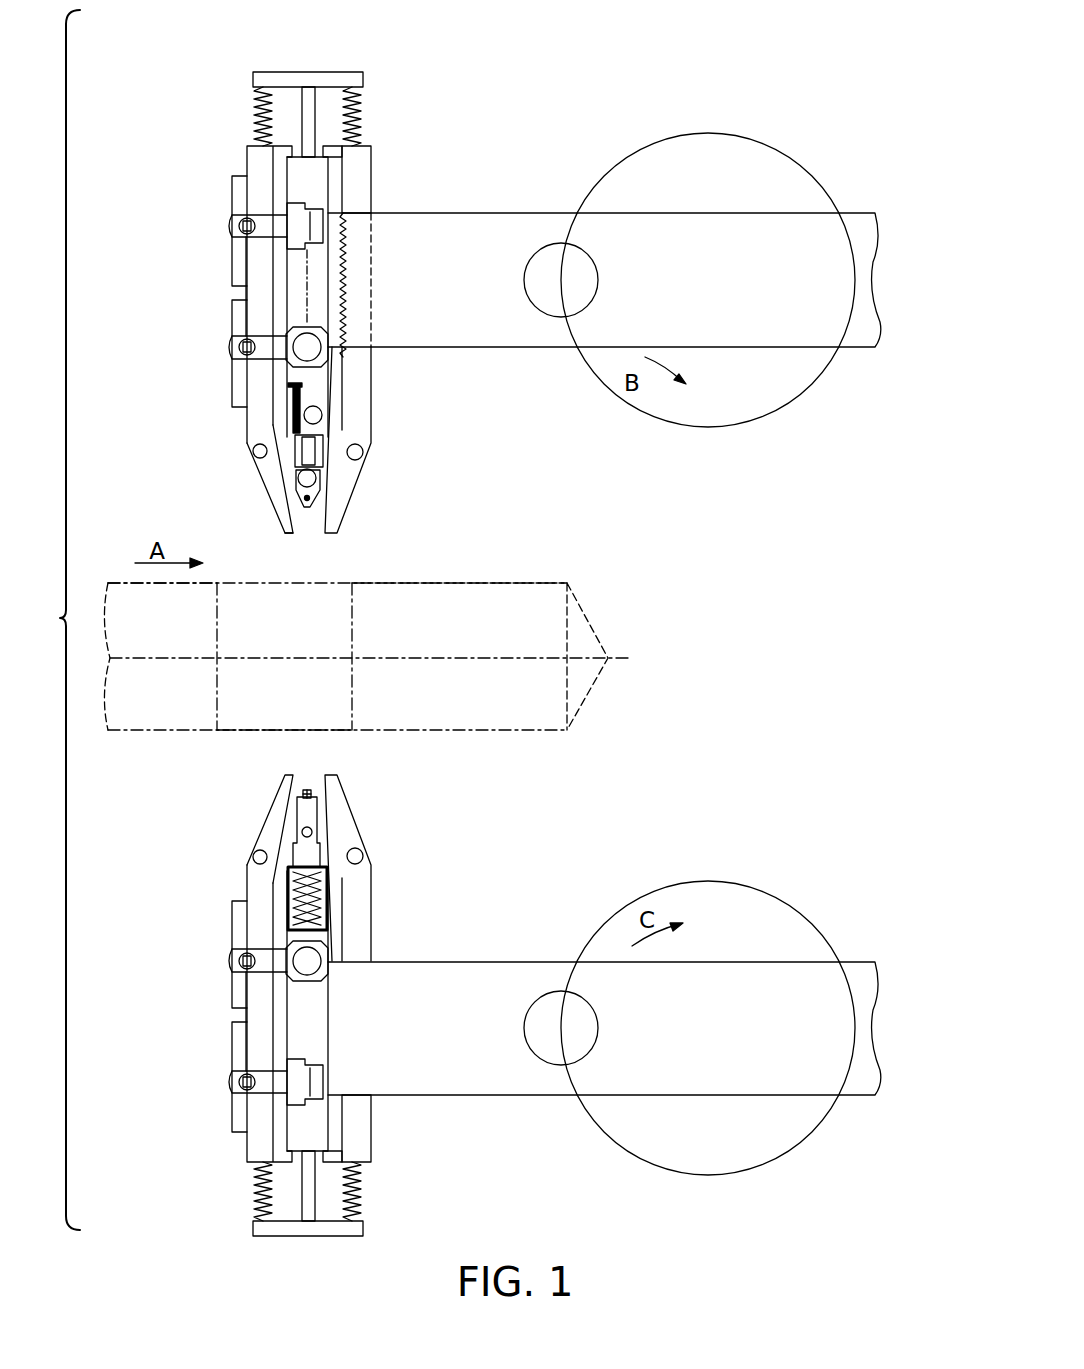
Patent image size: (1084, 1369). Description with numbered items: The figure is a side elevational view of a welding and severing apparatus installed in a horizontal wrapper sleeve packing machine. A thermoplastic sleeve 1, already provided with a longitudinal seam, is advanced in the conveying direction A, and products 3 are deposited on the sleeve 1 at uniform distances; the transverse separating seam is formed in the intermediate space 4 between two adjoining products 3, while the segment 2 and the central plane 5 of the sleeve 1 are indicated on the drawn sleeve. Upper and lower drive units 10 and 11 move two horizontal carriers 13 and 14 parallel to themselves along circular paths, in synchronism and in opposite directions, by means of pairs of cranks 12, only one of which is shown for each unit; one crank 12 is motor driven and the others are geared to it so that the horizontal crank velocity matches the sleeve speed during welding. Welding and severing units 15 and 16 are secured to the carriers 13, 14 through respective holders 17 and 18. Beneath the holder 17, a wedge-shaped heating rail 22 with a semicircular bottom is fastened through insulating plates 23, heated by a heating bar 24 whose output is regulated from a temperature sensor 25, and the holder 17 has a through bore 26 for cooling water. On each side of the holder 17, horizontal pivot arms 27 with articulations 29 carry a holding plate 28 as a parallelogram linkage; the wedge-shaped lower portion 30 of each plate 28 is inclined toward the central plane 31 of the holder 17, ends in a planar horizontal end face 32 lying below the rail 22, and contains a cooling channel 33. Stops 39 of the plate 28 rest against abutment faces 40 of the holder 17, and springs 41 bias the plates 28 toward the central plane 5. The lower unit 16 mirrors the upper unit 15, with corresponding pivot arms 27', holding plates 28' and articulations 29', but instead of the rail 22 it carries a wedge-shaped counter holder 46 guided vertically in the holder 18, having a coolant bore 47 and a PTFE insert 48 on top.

The sleeve 1 is at (213, 760).
The workpiece segment 2 is at (283, 735).
The products 3 is at (455, 600).
The intermediate space 4 is at (322, 597).
The central plane 5 is at (415, 663).
The upper drive unit 10 is at (607, 132).
The lower drive unit 11 is at (607, 882).
The crank 12 is at (555, 305).
The upper horizontal carrier 13 is at (468, 223).
The lower horizontal carrier 14 is at (470, 970).
The upper welding and severing unit 15 is at (180, 178).
The lower welding and severing unit 16 is at (180, 1140).
The holder 17 is at (313, 185).
The holder 18 is at (320, 1110).
The heating rail 22 is at (315, 485).
The insulating plates 23 is at (320, 455).
The heating bar 24 is at (322, 465).
The sensor 25 is at (310, 498).
The through bore 26 is at (320, 410).
The pivot arms 27 is at (214, 286).
The holding plate 28 is at (308, 280).
The articulations 29 is at (293, 282).
The lower portion 30 is at (268, 490).
The central plane 31 is at (305, 300).
The end face 32 is at (290, 530).
The cooling channel 33 is at (262, 455).
The stops 39 is at (332, 152).
The abutment faces 40 is at (300, 157).
The springs 41 is at (357, 100).
The counter holder 46 is at (310, 820).
The coolant bore 47 is at (312, 832).
The PTFE insert 48 is at (310, 795).
The pivot arms 27' is at (209, 1021).
The holding plate 28' is at (298, 1019).
The articulations 29' is at (251, 1028).